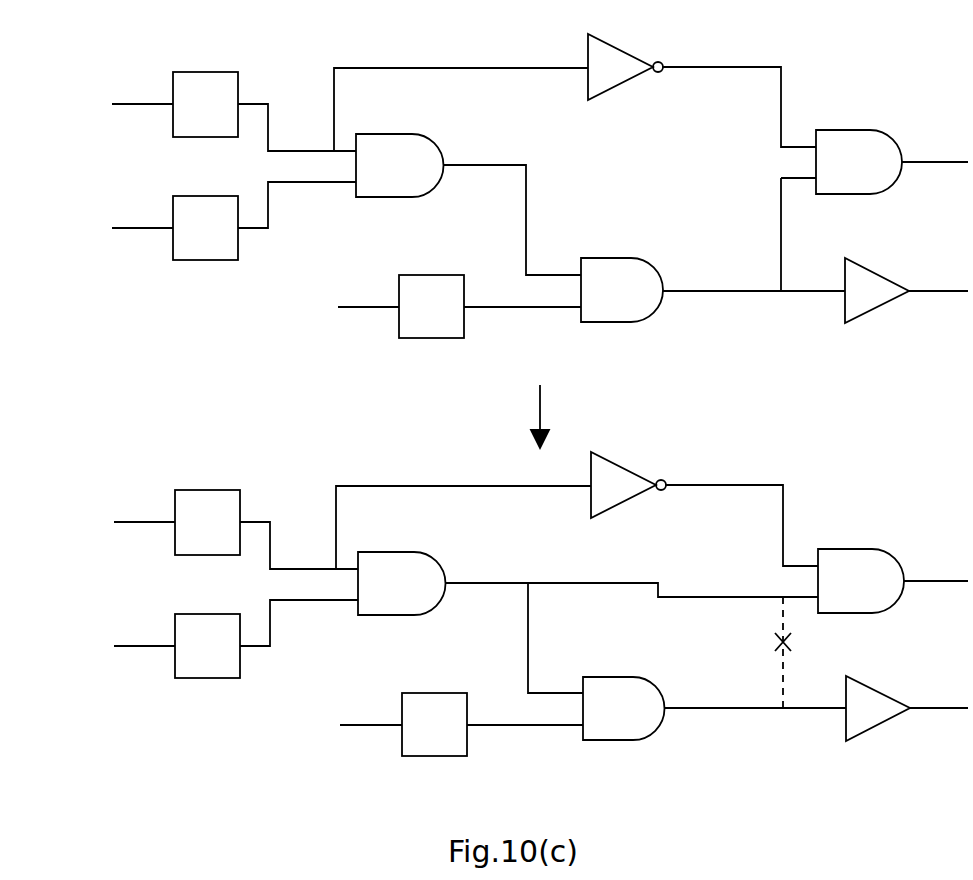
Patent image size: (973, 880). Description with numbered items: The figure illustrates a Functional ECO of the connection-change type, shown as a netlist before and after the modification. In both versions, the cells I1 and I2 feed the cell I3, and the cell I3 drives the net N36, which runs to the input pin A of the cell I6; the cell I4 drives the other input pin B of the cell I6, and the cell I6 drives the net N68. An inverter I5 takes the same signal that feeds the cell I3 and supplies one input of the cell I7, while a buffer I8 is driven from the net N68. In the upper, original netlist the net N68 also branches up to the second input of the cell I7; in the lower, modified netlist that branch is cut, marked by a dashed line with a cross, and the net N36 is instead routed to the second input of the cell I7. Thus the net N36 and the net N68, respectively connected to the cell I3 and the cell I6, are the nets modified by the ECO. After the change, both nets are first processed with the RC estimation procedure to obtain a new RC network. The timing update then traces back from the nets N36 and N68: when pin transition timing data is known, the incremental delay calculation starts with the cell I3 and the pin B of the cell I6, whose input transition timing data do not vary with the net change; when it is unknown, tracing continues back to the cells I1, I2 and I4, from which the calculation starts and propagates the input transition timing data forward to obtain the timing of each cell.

The cell I1 is at (235, 333).
The cell I2 is at (235, 451).
The cell I3 is at (462, 362).
The cell I4 is at (460, 536).
The inverter I5 is at (703, 300).
The cell I6 is at (623, 523).
The AND gate I7 is at (871, 419).
The buffer I8 is at (906, 517).
The net N36 is at (631, 429).
The net N68 is at (754, 481).
The input pin A of I6 A is at (554, 468).
The input pin of cell I6 B is at (523, 536).